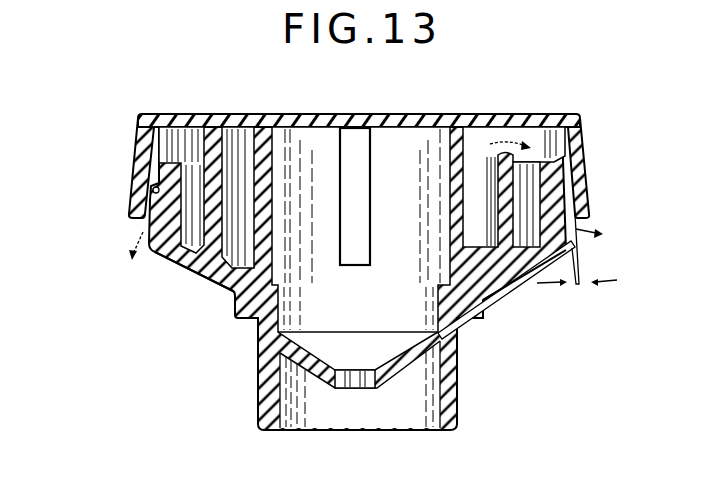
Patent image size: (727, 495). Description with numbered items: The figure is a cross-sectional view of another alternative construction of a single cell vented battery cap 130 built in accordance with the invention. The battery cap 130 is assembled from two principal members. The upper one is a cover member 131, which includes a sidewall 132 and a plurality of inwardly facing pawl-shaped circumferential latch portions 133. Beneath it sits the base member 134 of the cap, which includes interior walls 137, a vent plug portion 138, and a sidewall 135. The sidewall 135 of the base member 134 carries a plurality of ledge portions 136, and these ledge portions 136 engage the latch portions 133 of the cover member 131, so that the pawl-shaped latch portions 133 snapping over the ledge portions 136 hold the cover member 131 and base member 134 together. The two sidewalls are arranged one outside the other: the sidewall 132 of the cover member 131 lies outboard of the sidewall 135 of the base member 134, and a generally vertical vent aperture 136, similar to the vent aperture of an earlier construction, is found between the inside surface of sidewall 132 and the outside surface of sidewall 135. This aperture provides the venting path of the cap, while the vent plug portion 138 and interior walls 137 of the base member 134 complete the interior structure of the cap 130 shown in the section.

The battery cap 130 is at (476, 101).
The cover member 131 is at (337, 113).
The sidewall 132 is at (137, 144).
The latch portions 133 is at (136, 196).
The base member 134 is at (500, 274).
The sidewall 135 is at (167, 232).
The ledge portions 136 is at (163, 192).
The interior walls 137 is at (215, 224).
The vent plug portion 138 is at (260, 392).